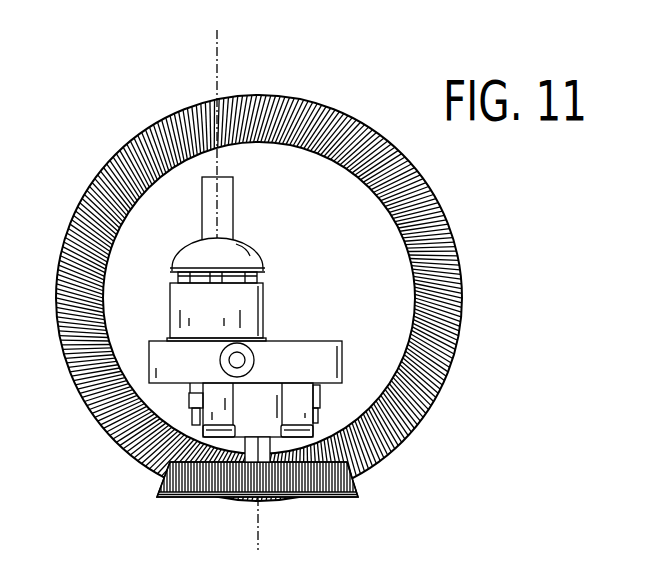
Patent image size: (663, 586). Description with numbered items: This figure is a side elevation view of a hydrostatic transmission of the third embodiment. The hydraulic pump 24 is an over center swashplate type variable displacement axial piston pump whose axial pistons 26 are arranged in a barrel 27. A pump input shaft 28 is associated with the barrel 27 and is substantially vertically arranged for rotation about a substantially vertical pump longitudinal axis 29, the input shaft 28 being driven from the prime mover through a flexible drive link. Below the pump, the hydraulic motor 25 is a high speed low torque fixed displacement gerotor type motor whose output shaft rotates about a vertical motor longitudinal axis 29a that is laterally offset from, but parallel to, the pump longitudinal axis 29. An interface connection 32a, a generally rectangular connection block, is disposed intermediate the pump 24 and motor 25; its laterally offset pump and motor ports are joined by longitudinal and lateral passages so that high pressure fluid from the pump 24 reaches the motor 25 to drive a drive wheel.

The hydraulic pump 24 is at (167, 315).
The hydraulic motor 25 is at (320, 415).
The axial pistons 26 is at (262, 281).
The barrel 27 is at (263, 320).
The pump input shaft 28 is at (235, 181).
The pump longitudinal axis 29 is at (216, 50).
The motor longitudinal axis 29a is at (258, 528).
The interface connection 32a is at (167, 355).